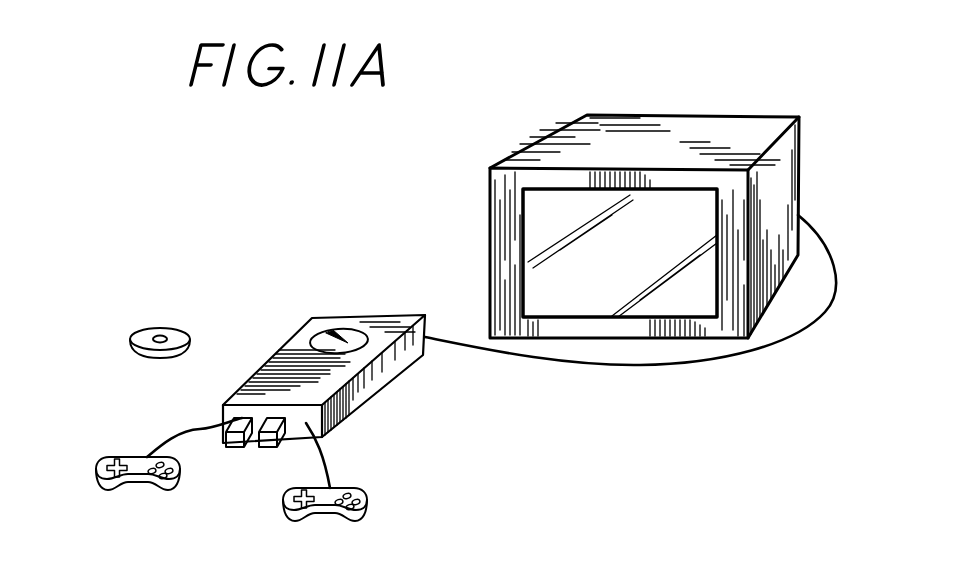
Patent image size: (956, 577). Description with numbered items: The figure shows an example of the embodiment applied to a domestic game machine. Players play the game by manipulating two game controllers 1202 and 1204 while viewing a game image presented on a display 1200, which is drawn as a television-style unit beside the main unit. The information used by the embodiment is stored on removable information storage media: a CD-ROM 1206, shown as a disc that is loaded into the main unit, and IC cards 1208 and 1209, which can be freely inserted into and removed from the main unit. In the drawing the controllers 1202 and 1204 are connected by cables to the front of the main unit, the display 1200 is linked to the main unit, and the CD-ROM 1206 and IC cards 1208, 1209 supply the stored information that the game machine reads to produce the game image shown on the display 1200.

The display 1200 is at (553, 272).
The game controller 1202 is at (98, 468).
The game controller 1204 is at (368, 500).
The CD-ROM 1206 is at (327, 332).
The IC card 1208 is at (247, 422).
The IC card 1209 is at (273, 438).